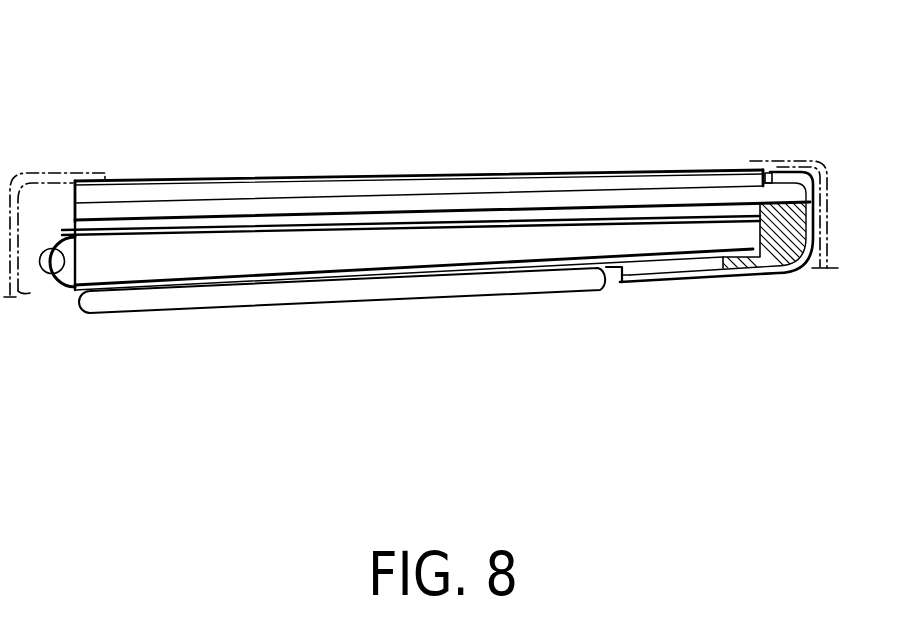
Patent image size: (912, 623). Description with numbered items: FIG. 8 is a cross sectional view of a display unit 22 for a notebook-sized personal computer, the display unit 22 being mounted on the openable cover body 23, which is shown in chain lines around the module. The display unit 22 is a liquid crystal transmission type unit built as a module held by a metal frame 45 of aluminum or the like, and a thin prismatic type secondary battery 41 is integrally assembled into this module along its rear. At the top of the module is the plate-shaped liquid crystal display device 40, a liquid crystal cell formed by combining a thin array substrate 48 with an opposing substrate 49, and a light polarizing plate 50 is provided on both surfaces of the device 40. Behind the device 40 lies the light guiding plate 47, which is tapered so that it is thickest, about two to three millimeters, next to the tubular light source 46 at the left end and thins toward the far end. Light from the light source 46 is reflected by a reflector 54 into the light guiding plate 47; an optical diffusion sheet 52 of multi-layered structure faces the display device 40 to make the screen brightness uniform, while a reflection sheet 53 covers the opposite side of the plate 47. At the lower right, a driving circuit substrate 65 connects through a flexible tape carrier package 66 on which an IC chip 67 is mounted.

The display unit 22 is at (700, 166).
The cover body 23 is at (55, 173).
The liquid crystal display device 40 is at (342, 60).
The thin prismatic type secondary battery 41 is at (378, 290).
The metal frame 45 is at (777, 273).
The light source 46 is at (43, 290).
The light guiding plate 47 is at (213, 258).
The array substrate 48 is at (327, 210).
The opposing substrate 49 is at (250, 190).
The light polarizing plate 50 is at (393, 178).
The optical diffusion sheet 52 is at (282, 237).
The reflection sheet 53 is at (325, 277).
The reflector 54 is at (62, 290).
The driving circuit substrate 65 is at (630, 270).
The tape carrier package 66 is at (698, 280).
The IC chip 67 is at (793, 170).